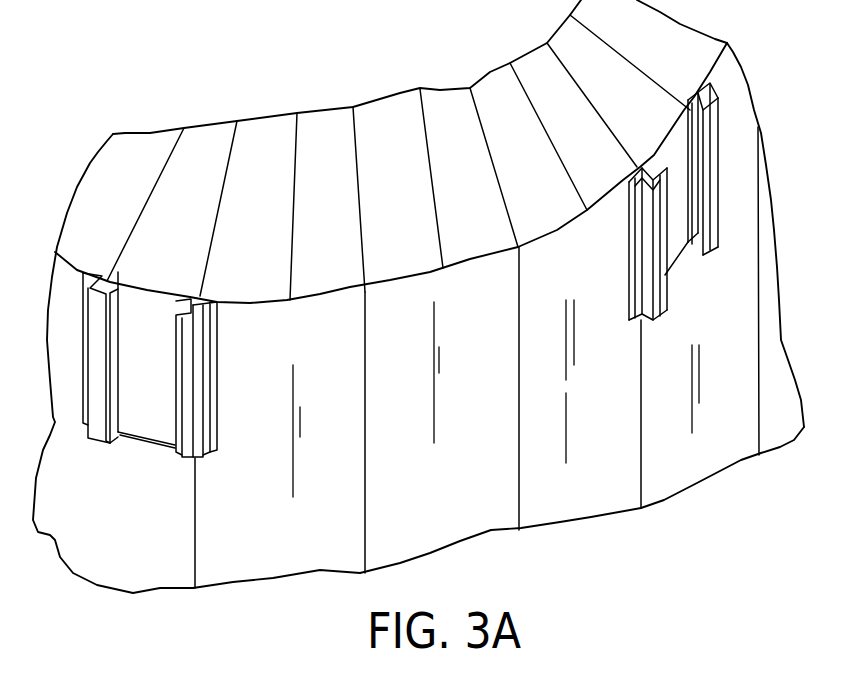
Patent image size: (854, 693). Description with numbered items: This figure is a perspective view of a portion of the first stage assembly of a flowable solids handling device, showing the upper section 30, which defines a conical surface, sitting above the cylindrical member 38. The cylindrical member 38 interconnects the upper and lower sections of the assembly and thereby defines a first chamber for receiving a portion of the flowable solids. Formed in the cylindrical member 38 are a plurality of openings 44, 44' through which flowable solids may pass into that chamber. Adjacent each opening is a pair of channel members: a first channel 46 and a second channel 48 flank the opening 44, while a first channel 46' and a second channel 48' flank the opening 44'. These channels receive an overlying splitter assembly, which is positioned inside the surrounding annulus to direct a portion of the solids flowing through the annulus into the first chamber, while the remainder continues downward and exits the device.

The upper section 30 is at (407, 161).
The cylindrical member 38 is at (457, 498).
The opening 44 is at (146, 386).
The first channel 46 is at (131, 328).
The second channel 48 is at (216, 335).
The opening 44' is at (704, 277).
The first channel 46' is at (619, 226).
The second channel 48' is at (686, 148).